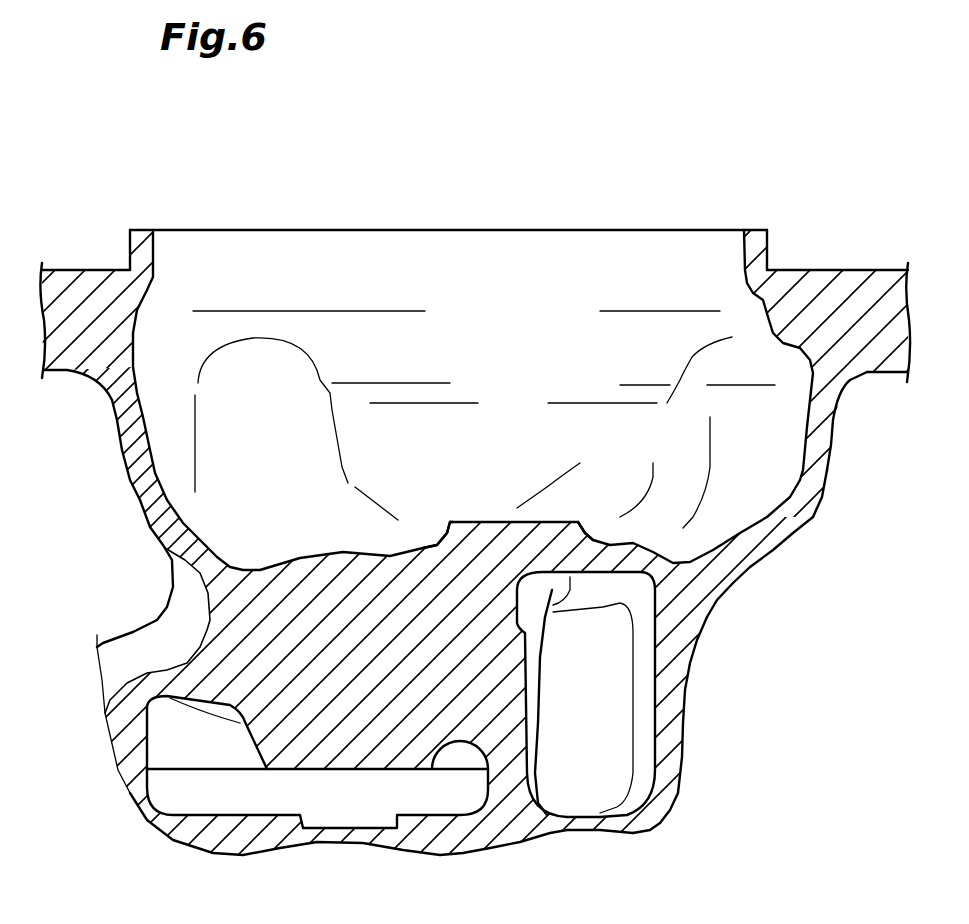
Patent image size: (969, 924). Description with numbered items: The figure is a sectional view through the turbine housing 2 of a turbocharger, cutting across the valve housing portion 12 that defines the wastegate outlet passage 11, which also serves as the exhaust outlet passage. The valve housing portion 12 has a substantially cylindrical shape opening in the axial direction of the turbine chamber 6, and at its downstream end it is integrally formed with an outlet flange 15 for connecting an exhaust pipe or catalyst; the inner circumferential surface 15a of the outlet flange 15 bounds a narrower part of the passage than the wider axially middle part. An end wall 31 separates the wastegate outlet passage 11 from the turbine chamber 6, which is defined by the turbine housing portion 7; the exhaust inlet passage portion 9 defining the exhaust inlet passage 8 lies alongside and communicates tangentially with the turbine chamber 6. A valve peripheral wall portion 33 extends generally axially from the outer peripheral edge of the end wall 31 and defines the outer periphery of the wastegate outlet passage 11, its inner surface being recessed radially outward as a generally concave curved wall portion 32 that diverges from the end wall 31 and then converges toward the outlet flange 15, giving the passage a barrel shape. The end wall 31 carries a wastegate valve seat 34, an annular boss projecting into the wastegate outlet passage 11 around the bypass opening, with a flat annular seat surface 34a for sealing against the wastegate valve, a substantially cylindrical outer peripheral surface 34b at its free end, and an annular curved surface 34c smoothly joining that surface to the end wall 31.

The turbine housing 2 is at (652, 114).
The turbine chamber 6 is at (334, 804).
The turbine housing portion 7 is at (504, 853).
The exhaust inlet passage 8 is at (186, 754).
The exhaust inlet passage portion 9 is at (688, 703).
The wastegate outlet passage 11 is at (479, 292).
The valve housing portion 12 is at (835, 450).
The outlet flange 15 is at (850, 285).
The inner circumferential surface of the outlet flange 15a is at (743, 248).
The end wall 31 is at (680, 580).
The curved wall portion 32 is at (157, 517).
The valve peripheral wall portion 33 is at (128, 431).
The wastegate valve seat 34 is at (395, 463).
The seat surface 34a is at (427, 548).
The outer peripheral surface 34b is at (445, 528).
The annular curved surface 34c is at (500, 517).